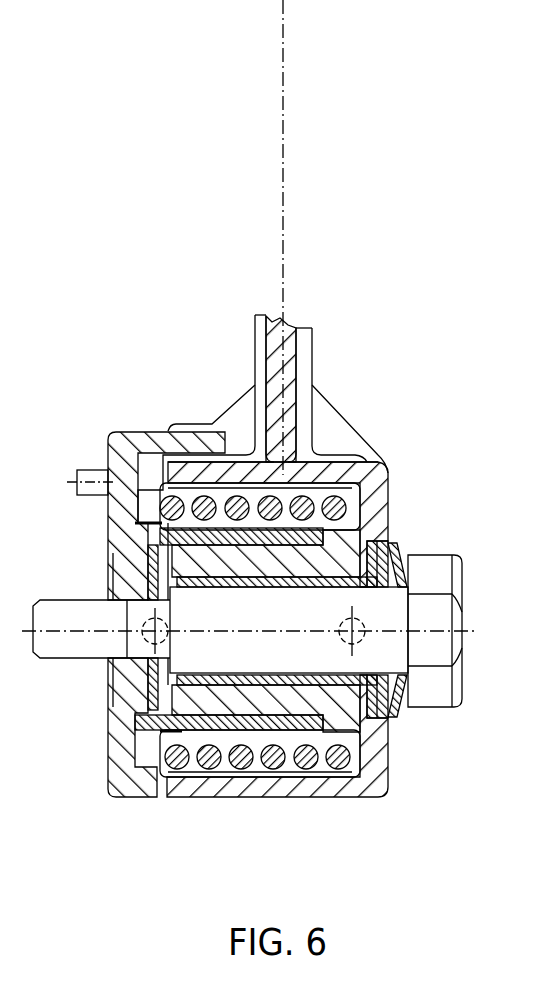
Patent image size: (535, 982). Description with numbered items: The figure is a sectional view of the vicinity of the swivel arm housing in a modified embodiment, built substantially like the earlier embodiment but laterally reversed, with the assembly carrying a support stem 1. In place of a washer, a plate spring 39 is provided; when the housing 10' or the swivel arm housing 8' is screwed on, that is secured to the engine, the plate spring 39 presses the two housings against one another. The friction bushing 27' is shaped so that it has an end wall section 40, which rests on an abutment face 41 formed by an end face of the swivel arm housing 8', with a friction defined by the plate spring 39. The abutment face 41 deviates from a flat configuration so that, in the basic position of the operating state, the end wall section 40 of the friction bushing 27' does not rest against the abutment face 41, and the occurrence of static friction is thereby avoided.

The support stem / sheet metal bracket 1 is at (315, 343).
The swivel arm housing 8' is at (274, 658).
The housing 10' is at (166, 643).
The friction bushing 27' is at (256, 630).
The plate spring 39 is at (398, 548).
The end wall section 40 is at (163, 563).
The abutment face 41 is at (193, 673).